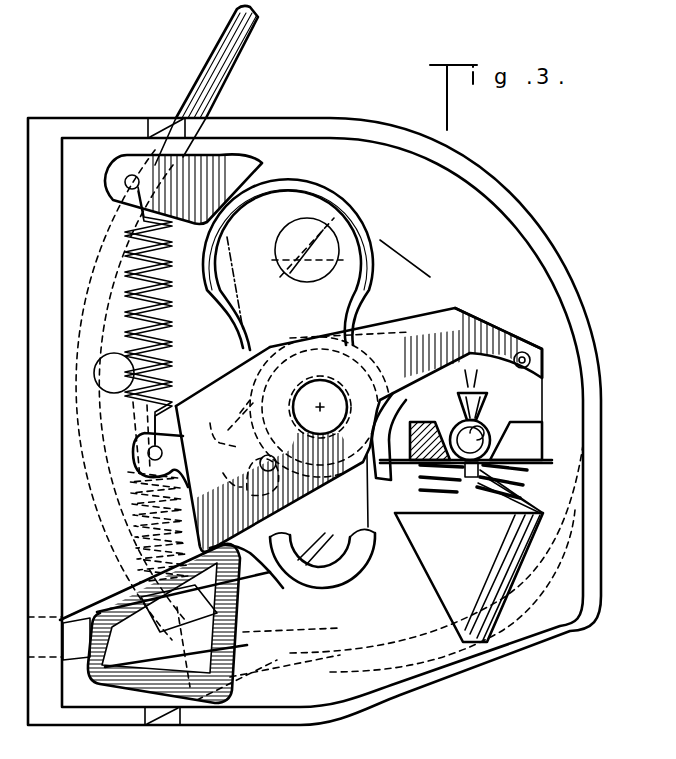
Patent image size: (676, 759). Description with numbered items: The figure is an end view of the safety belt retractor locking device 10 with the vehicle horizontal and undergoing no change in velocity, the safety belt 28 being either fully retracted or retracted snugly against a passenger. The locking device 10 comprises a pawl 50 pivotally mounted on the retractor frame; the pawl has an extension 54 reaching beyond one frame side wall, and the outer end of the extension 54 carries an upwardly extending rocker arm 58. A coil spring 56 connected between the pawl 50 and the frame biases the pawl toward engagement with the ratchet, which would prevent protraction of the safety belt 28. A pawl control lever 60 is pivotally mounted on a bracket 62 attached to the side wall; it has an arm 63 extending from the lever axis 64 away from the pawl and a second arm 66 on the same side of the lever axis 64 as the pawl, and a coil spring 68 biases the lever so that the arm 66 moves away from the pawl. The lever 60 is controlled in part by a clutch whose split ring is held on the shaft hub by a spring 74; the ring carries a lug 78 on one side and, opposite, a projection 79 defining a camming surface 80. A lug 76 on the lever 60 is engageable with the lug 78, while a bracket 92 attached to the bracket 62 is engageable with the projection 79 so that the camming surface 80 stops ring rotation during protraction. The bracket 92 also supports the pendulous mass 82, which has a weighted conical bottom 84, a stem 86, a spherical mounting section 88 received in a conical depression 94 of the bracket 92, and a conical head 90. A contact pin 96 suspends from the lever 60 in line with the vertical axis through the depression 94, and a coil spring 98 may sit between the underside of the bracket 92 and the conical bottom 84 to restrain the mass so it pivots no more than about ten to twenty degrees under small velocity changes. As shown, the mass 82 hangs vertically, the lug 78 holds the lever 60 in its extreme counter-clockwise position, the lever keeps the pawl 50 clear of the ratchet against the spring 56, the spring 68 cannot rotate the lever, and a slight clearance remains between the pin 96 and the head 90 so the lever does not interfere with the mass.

The locking device 10 is at (362, 84).
The safety belt 28 is at (248, 38).
The bracket 62 is at (217, 160).
The spring 74 is at (327, 197).
The coil spring 68 is at (125, 240).
The pawl control lever 60 is at (392, 310).
The second arm 66 is at (215, 387).
The lever axis 64 is at (324, 404).
The arm 63 is at (463, 312).
The projection 79 is at (408, 337).
The camming surface 80 is at (415, 399).
The lug 78 is at (213, 432).
The lug 76 is at (237, 476).
The coil spring 56 is at (130, 443).
The pawl 50 is at (122, 599).
The extension 54 is at (273, 648).
The rocker arm 58 is at (322, 572).
The conical depression 94 is at (440, 418).
The spherical mounting section 88 is at (481, 424).
The conical crown or head 90 is at (460, 392).
The contact 96 is at (478, 375).
The bracket 92 is at (533, 432).
The coil spring 98 is at (530, 478).
The stem 86 is at (475, 478).
The pendulous mass 82 is at (423, 582).
The weighted conical bottom 84 is at (452, 597).